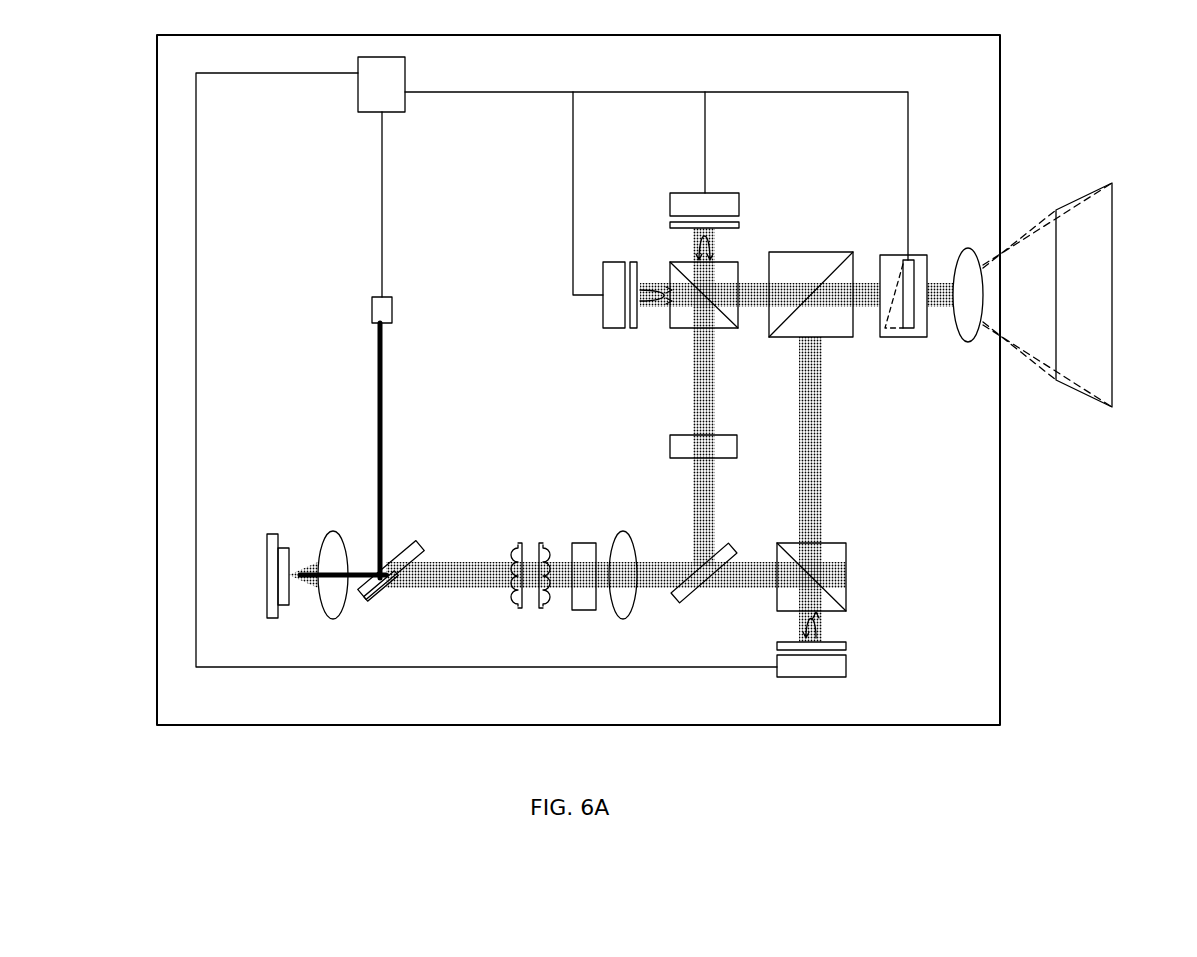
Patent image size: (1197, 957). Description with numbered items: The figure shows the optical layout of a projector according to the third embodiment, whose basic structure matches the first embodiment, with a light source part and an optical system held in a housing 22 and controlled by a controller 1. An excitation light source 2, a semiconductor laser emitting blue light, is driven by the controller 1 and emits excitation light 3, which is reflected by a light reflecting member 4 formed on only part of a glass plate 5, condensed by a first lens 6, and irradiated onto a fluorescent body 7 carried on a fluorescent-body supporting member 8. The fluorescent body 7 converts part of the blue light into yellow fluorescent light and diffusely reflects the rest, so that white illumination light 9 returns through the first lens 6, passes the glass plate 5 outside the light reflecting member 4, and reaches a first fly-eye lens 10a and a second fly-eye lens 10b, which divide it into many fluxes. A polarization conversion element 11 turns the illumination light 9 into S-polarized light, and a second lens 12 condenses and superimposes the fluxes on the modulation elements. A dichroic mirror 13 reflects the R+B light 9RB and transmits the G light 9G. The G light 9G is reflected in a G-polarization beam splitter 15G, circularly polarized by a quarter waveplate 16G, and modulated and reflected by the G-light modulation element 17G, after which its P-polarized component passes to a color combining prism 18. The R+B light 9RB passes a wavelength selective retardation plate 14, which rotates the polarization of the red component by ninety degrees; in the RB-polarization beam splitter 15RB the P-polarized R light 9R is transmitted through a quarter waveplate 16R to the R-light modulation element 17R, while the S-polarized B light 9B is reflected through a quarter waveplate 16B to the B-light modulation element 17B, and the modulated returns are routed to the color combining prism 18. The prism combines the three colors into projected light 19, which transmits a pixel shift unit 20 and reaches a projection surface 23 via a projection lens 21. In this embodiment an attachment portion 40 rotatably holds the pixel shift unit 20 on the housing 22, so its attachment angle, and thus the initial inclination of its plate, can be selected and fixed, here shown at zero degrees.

The controller 1 is at (362, 100).
The excitation light source 2 is at (380, 312).
The excitation light 3 is at (383, 424).
The light reflecting member 4 is at (401, 596).
The glass plate 5 is at (375, 598).
The first lens 6 is at (333, 603).
The fluorescent body 7 is at (285, 605).
The fluorescent-body supporting member 8 is at (268, 582).
The illumination light 9 is at (453, 566).
The first fly-eye lens 10a is at (516, 606).
The second fly-eye lens 10b is at (547, 544).
The polarization conversion element 11 is at (586, 606).
The second lens 12 is at (623, 604).
The dichroic mirror 13 is at (690, 601).
The wavelength selective retardation plate 14 is at (672, 448).
The G-polarization beam splitter 15G is at (846, 576).
The RB-polarization beam splitter 15RB is at (735, 330).
The quarter waveplate 16G is at (846, 646).
The quarter waveplate 16R is at (676, 226).
The quarter waveplate 16B is at (634, 332).
The G-light modulation element 17G is at (808, 677).
The R-light modulation element 17R is at (740, 205).
The B-light modulation element 17B is at (615, 286).
The R light 9R is at (692, 248).
The B light 9B is at (660, 308).
The G light 9G is at (727, 586).
The R+B light 9RB is at (696, 516).
The color combining prism 18 is at (812, 266).
The projected light 19 is at (862, 290).
The pixel shift unit 20 is at (906, 328).
The projection lens 21 is at (966, 340).
The housing 22 is at (982, 682).
The projection surface 23 is at (1098, 298).
The attachment portion 40 is at (918, 266).